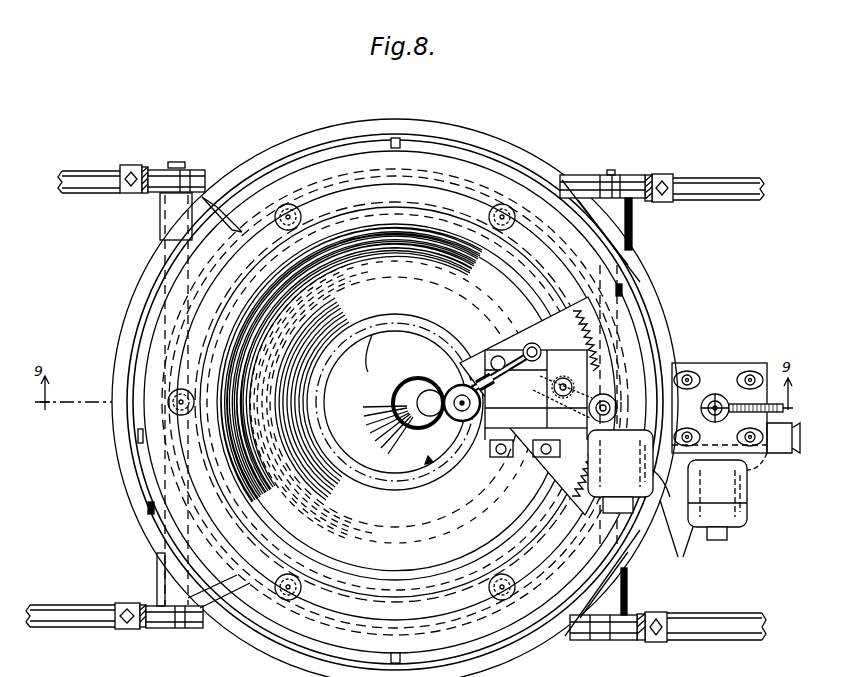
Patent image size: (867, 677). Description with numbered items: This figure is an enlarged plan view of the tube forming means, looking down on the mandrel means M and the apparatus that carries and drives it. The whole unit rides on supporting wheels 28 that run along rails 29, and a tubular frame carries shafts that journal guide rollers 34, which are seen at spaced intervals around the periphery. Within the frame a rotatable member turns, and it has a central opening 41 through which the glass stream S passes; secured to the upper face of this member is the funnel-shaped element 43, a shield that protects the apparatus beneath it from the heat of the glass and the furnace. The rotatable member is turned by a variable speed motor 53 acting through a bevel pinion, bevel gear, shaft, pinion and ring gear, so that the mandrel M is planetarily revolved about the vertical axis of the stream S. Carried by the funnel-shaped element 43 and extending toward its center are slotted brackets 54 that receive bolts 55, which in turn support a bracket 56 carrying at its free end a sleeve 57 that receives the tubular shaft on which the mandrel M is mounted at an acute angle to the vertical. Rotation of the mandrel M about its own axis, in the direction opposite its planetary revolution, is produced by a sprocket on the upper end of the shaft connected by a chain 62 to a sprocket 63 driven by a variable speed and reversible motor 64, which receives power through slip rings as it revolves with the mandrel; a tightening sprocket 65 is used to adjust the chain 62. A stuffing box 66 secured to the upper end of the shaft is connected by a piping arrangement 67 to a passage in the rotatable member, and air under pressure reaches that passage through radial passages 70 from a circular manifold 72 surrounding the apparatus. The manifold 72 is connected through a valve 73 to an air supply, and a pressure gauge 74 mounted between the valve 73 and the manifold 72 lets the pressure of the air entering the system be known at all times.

The supporting wheels 28 is at (160, 182).
The rails 29 is at (86, 170).
The guide rollers 34 is at (166, 388).
The opening 41 is at (322, 366).
The funnel-shaped element 43 is at (253, 342).
The variable speed motor 53 is at (747, 500).
The brackets 54 is at (489, 368).
The bolts 55 is at (546, 456).
The bracket 56 is at (497, 442).
The sleeve 57 is at (423, 380).
The chain 62 is at (538, 422).
The sprocket 63 is at (623, 378).
The variable speed and reversible motor 64 is at (668, 512).
The tightening sprocket 65 is at (553, 388).
The stuffing box 66 is at (460, 384).
The piping arrangement 67 is at (527, 346).
The radial passages 70 is at (395, 139).
The circular manifold 72 is at (462, 136).
The valve 73 is at (722, 398).
The pressure gauge 74 is at (710, 398).
The mandrel means M is at (373, 336).
The stream S is at (366, 414).